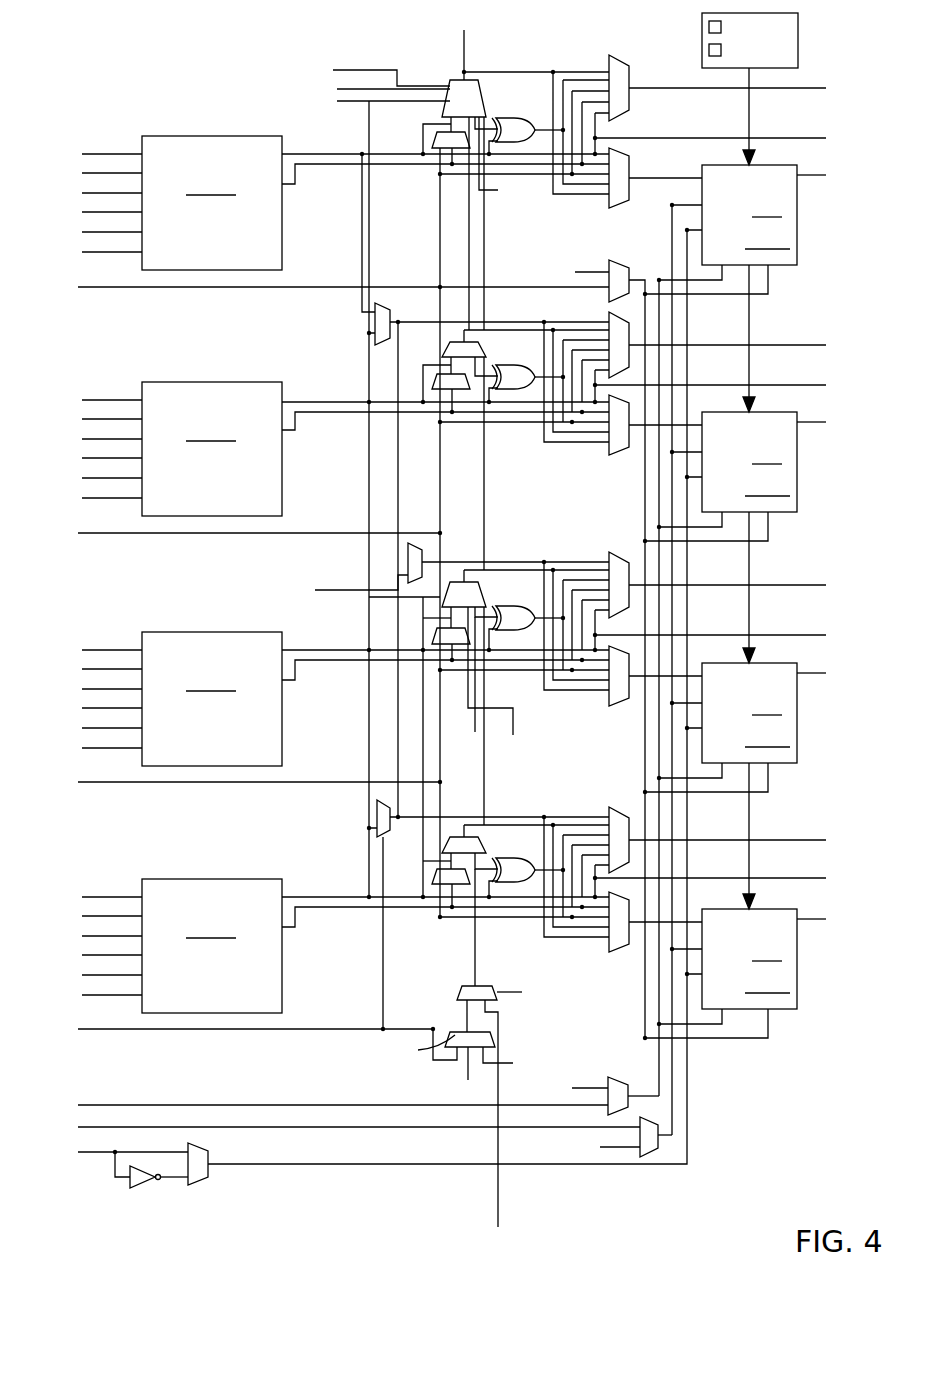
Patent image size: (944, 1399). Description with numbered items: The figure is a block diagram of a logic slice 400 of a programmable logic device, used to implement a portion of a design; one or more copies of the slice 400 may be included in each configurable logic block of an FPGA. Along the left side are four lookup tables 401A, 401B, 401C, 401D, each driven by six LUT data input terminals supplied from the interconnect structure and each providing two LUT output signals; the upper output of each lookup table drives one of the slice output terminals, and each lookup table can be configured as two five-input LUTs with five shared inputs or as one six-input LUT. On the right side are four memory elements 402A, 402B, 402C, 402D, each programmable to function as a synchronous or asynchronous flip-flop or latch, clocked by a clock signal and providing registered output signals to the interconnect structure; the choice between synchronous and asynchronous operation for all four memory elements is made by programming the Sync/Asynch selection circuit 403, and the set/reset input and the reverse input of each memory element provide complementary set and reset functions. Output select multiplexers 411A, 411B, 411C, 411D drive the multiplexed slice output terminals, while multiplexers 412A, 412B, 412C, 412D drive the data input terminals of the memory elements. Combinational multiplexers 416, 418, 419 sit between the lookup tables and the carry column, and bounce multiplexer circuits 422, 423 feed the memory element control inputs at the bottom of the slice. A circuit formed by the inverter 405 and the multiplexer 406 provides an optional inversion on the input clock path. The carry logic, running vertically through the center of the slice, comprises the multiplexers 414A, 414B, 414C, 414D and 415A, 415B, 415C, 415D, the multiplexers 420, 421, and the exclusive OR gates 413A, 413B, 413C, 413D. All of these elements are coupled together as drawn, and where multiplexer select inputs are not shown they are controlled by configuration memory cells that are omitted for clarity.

The logic slice 400 is at (146, 52).
The lookup table 401A is at (238, 969).
The lookup table 401B is at (238, 722).
The lookup table 401C is at (238, 472).
The lookup table 401D is at (238, 226).
The memory element 402A is at (793, 985).
The memory element 402B is at (793, 739).
The memory element 402C is at (793, 488).
The memory element 402D is at (793, 241).
The Sync/Asynch selection circuit 403 is at (702, 52).
The inverter 405 is at (140, 1190).
The multiplexer 406 is at (200, 1180).
The output select multiplexer 411A is at (610, 816).
The output select multiplexer 411B is at (610, 560).
The output select multiplexer 411C is at (610, 316).
The output select multiplexer 411D is at (631, 100).
The multiplexer 412A is at (611, 952).
The multiplexer 412B is at (611, 708).
The multiplexer 412C is at (611, 458).
The multiplexer 412D is at (640, 165).
The exclusive OR gate 413A is at (512, 847).
The exclusive OR gate 413B is at (512, 595).
The exclusive OR gate 413C is at (512, 354).
The exclusive OR gate 413D is at (514, 114).
The carry multiplexer 414A is at (452, 837).
The carry multiplexer 414B is at (455, 582).
The carry multiplexer 414C is at (452, 342).
The carry multiplexer 414D is at (497, 60).
The carry multiplexer 415A is at (460, 886).
The carry multiplexer 415B is at (460, 646).
The carry multiplexer 415C is at (458, 390).
The carry multiplexer 415D is at (437, 148).
The combinational multiplexer 416 is at (383, 303).
The combinational multiplexer 418 is at (408, 552).
The combinational multiplexer 419 is at (388, 836).
The carry multiplexer 420 is at (498, 1022).
The carry multiplexer 421 is at (614, 260).
The bounce multiplexer circuit 422 is at (610, 1078).
The bounce multiplexer circuit 423 is at (648, 1158).